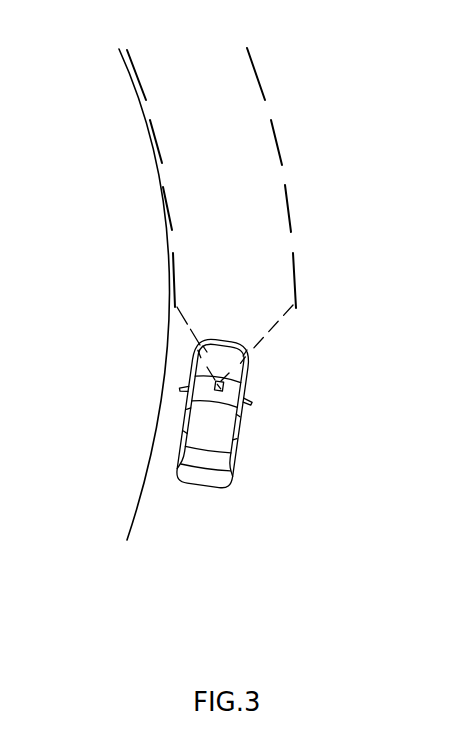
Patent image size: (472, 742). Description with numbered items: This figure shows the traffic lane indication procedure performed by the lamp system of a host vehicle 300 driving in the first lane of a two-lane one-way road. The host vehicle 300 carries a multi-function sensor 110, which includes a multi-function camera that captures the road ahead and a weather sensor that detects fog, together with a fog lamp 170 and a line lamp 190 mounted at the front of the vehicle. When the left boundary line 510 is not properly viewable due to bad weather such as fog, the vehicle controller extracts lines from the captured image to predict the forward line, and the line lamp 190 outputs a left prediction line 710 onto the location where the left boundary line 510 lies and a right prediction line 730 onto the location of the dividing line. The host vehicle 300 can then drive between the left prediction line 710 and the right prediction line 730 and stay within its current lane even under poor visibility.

The multi-function sensor 110 is at (216, 383).
The fog lamp 170 is at (205, 343).
The line lamp 190 is at (245, 350).
The host vehicle 300 is at (198, 483).
The left boundary line 510 is at (140, 117).
The left prediction line 710 is at (137, 74).
The right prediction line 730 is at (280, 152).